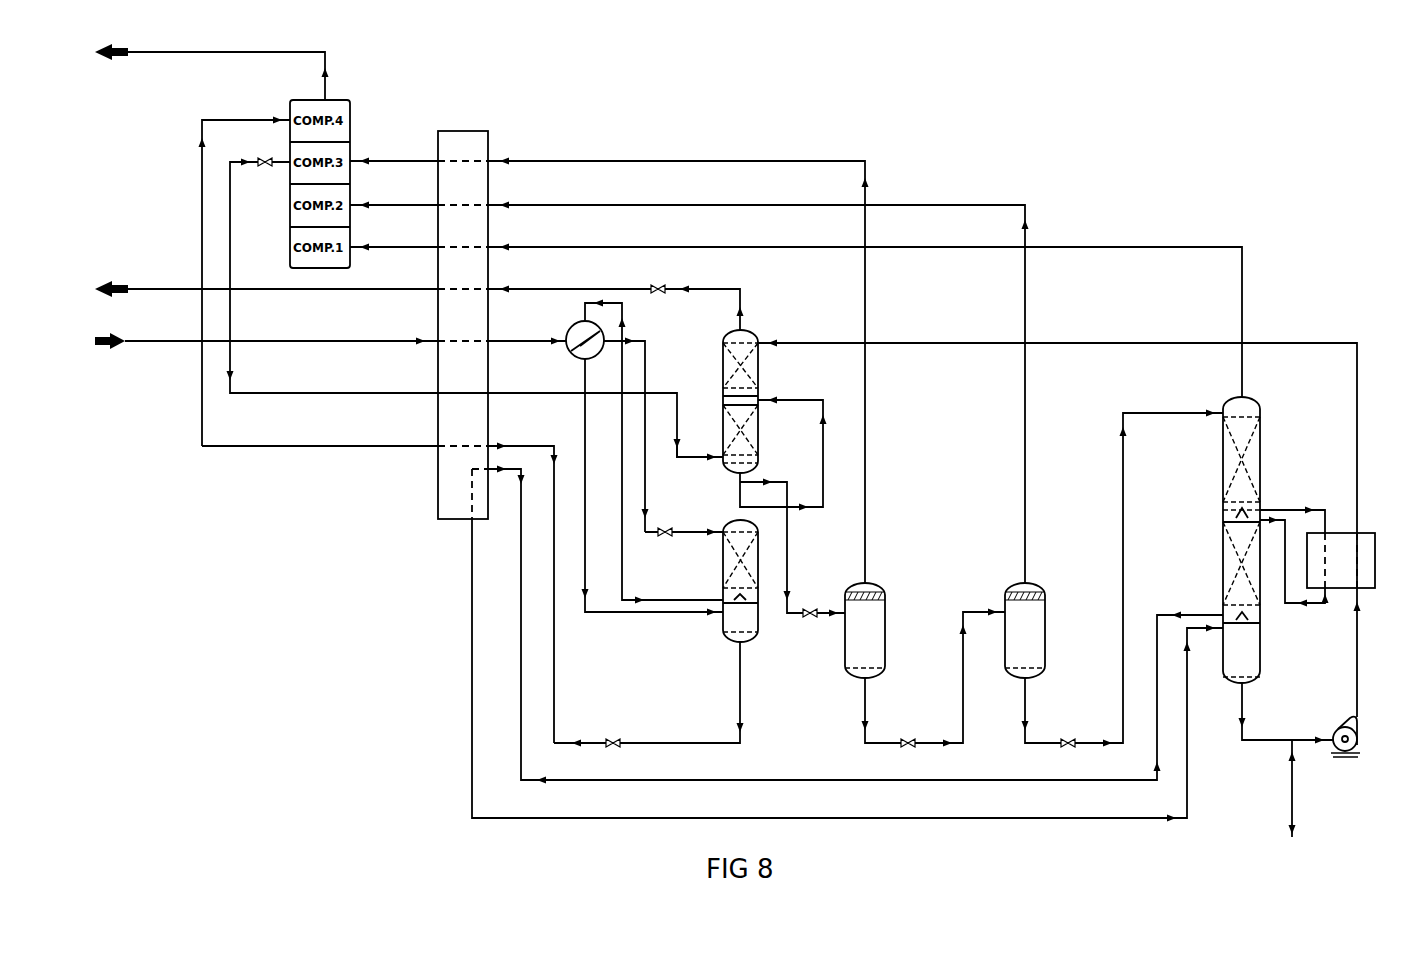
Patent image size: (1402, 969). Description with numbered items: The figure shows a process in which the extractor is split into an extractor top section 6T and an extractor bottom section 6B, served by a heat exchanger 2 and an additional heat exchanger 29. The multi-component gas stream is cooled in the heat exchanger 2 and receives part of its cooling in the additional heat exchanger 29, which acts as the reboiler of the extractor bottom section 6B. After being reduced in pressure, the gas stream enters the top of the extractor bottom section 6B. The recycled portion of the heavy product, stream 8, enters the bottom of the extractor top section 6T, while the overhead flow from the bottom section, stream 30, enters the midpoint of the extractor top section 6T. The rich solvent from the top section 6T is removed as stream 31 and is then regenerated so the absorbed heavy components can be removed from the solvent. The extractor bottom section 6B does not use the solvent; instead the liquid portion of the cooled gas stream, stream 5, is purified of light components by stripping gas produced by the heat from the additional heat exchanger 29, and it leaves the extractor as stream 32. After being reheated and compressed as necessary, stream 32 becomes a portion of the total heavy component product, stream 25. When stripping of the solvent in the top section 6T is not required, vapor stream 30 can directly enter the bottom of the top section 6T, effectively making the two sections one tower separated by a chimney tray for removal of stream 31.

The total heavy component product stream 25 is at (212, 62).
The heat exchanger 2 is at (437, 465).
The additional heat exchanger 29 is at (568, 361).
The extractor top section 6T is at (716, 395).
The recycled portion of the heavy product stream 8 is at (700, 447).
The overhead flow from bottom section 30 is at (783, 454).
The liquid portion of cooled multi-component gas stream 5 is at (683, 522).
The rich solvent stream 31 is at (792, 548).
The extractor bottom section 6B is at (718, 626).
The extractor bottoms stream 32 is at (649, 694).